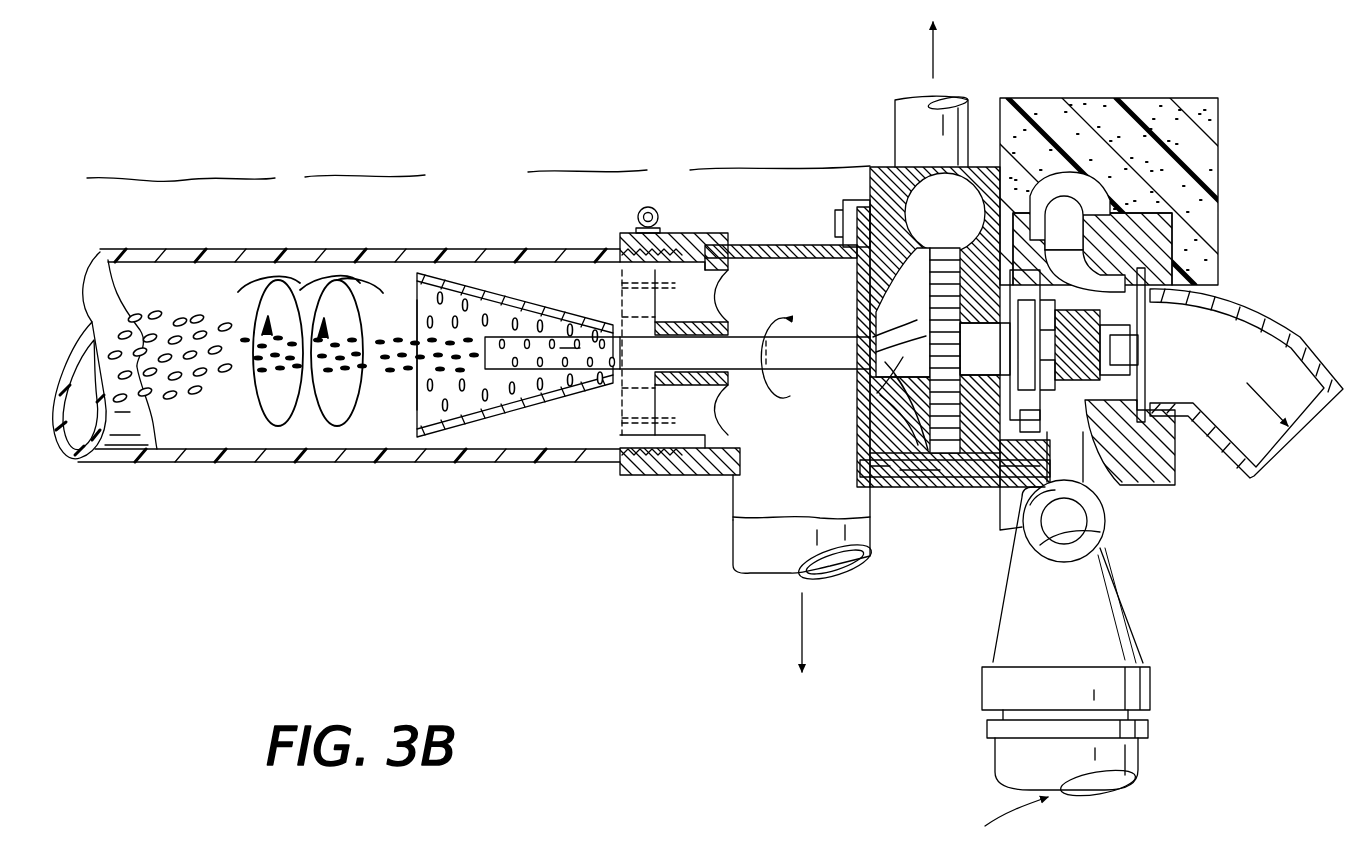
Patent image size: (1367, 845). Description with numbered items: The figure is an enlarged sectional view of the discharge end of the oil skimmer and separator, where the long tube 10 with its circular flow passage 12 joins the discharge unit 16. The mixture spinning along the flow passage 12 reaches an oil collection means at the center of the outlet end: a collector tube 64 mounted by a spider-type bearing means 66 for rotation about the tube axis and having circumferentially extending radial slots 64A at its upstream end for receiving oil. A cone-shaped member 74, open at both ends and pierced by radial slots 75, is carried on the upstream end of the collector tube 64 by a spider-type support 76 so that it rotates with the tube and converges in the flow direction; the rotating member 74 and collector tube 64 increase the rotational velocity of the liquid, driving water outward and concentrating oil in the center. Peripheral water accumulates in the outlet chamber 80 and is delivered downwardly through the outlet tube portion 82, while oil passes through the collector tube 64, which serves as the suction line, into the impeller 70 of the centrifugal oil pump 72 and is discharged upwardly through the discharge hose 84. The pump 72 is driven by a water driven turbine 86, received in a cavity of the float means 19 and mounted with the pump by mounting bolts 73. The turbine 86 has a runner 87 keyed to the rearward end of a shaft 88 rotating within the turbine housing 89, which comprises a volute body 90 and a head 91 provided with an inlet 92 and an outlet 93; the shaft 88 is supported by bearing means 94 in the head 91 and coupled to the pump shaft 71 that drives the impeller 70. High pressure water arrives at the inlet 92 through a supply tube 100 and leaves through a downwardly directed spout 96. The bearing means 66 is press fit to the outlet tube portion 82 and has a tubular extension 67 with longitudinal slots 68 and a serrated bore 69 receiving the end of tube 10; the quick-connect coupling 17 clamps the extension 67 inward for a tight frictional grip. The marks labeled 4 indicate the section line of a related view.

The section line 4- 4 is at (555, 180).
The tube 10 is at (264, 250).
The flow passage 12 is at (205, 303).
The discharge unit 16 is at (990, 563).
The quick-connect coupling 17 is at (655, 206).
The float means 19 is at (1175, 98).
The collector tube 64 is at (752, 337).
The radial slots 64A is at (577, 337).
The spider-type bearing means 66 is at (712, 478).
The tubular extension 67 is at (665, 478).
The longitudinal slots 68 is at (680, 392).
The bore 69 is at (700, 232).
The impeller 70 is at (857, 410).
The shaft 71 is at (990, 352).
The centrifugal oil pump 72 is at (878, 167).
The mounting bolts 73 is at (898, 478).
The cone-shaped member 74 is at (450, 297).
The radial slots 75 is at (427, 386).
The spider-type support 76 is at (557, 380).
The outlet chamber 80 is at (825, 425).
The outlet tube portion 82 is at (760, 555).
The discharge hose 84 is at (910, 117).
The water driven turbine 86 is at (1083, 562).
The runner 87 is at (1163, 455).
The shaft 88 is at (1097, 322).
The turbine housing 89 is at (1172, 243).
The volute body 90 is at (1085, 530).
The head 91 is at (992, 487).
The inlet 92 is at (1115, 620).
The outlet 93 is at (1148, 383).
The bearing means 94 is at (1057, 373).
The spout 96 is at (1280, 322).
The supply tube 100 is at (1125, 760).